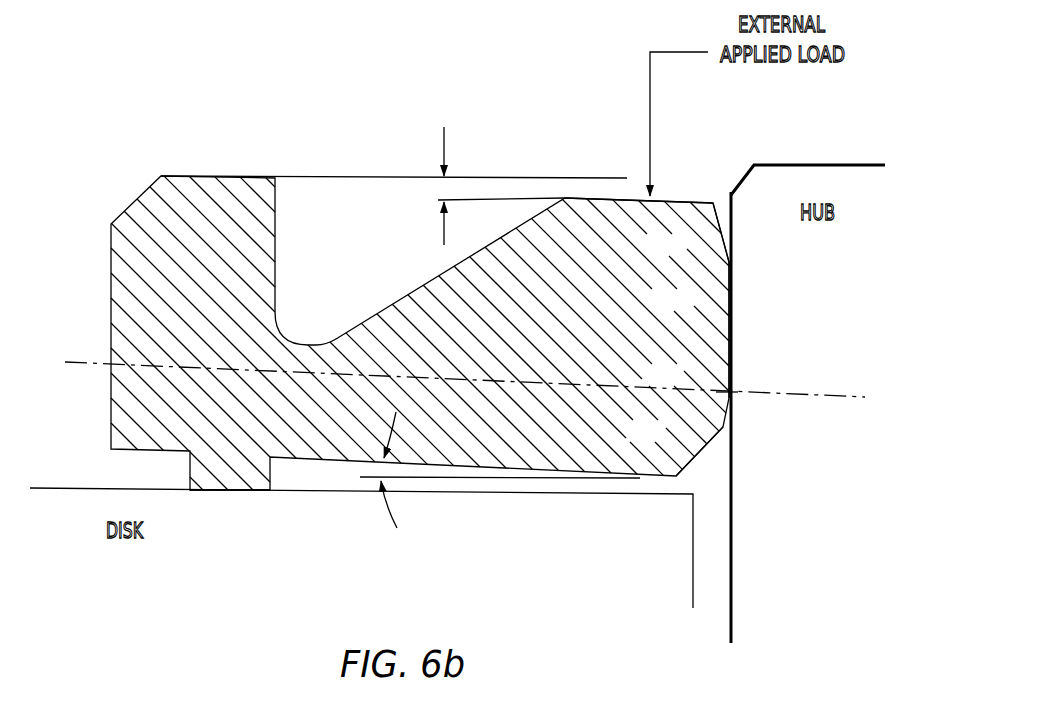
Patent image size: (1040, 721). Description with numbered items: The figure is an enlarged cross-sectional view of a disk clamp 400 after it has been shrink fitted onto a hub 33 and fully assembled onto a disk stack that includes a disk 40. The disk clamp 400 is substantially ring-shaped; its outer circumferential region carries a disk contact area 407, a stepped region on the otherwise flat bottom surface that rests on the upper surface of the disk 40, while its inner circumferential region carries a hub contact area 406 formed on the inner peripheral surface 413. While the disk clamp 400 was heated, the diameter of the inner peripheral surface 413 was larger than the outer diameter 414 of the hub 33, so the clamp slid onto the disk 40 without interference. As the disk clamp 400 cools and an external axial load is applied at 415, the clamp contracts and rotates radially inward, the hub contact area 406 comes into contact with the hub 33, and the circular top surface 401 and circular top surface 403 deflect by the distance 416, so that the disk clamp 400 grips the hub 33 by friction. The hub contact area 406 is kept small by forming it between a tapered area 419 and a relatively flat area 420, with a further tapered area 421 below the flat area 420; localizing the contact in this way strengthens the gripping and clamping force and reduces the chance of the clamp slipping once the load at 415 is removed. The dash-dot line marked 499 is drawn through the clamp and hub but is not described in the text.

The disk clamp 400 is at (675, 157).
The circular top surface 401 is at (687, 203).
The circular top surface 403 is at (178, 176).
The hub contact area 406 is at (722, 291).
The disk contact area 407 is at (256, 492).
The inner peripheral surface 413 is at (712, 369).
The outer diameter 414 is at (740, 335).
The external load application point 415 is at (650, 100).
The deflection distance 416 is at (444, 140).
The tapered area 419 is at (712, 238).
The flat area 420 is at (717, 400).
The tapered area 421 is at (685, 450).
The centerline 499 is at (850, 396).
The hub 33 is at (835, 165).
The disk 40 is at (174, 568).